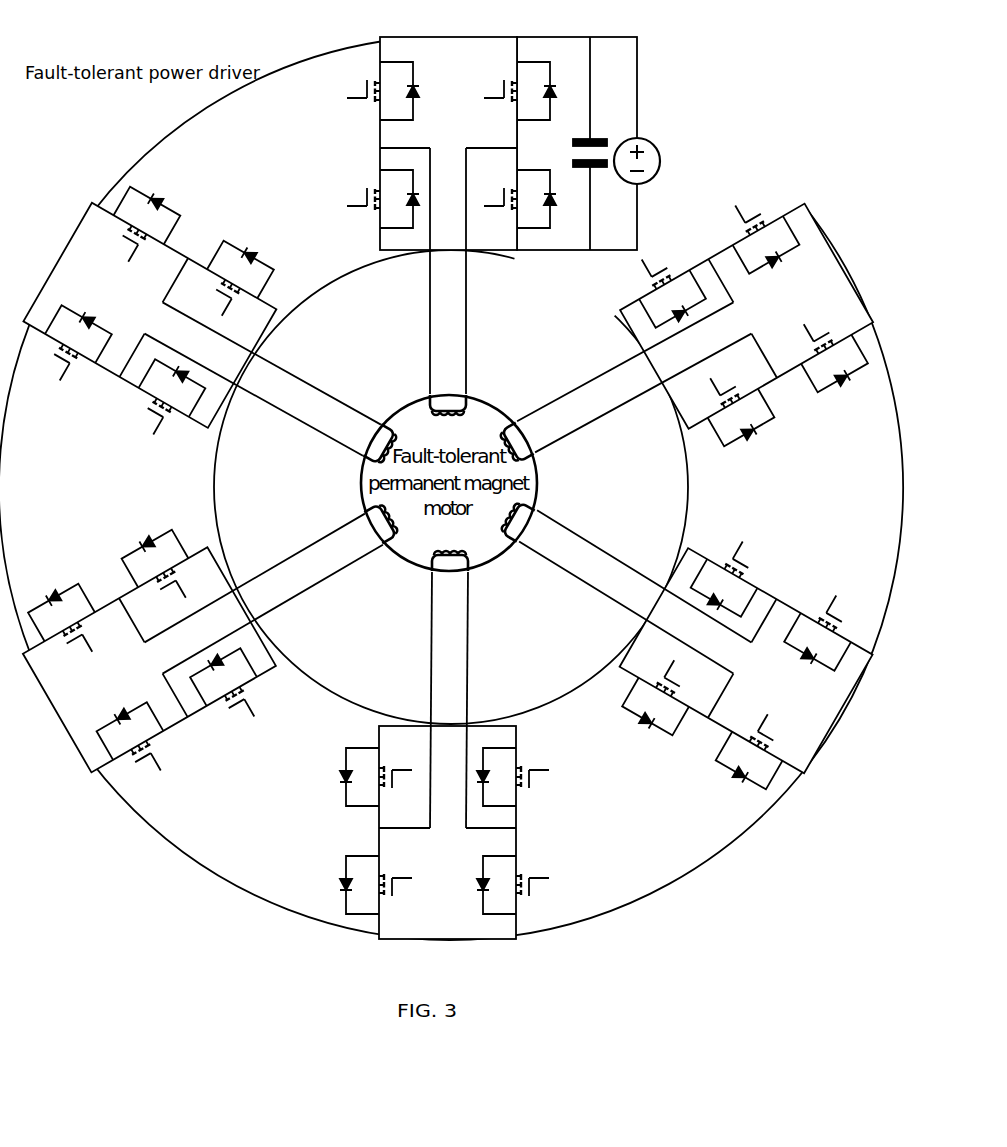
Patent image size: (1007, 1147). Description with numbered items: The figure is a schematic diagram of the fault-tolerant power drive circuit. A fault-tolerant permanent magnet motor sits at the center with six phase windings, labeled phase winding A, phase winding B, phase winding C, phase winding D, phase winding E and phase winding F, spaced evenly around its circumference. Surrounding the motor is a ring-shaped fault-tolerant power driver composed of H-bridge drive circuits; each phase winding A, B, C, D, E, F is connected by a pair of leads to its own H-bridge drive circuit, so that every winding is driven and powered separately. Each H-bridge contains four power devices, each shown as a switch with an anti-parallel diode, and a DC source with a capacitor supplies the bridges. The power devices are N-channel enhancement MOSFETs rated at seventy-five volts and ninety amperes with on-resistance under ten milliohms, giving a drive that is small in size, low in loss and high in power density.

The phase winding A is at (448, 281).
The phase winding B is at (624, 382).
The phase winding C is at (625, 587).
The phase winding D is at (449, 689).
The phase winding E is at (272, 587).
The phase winding F is at (272, 383).